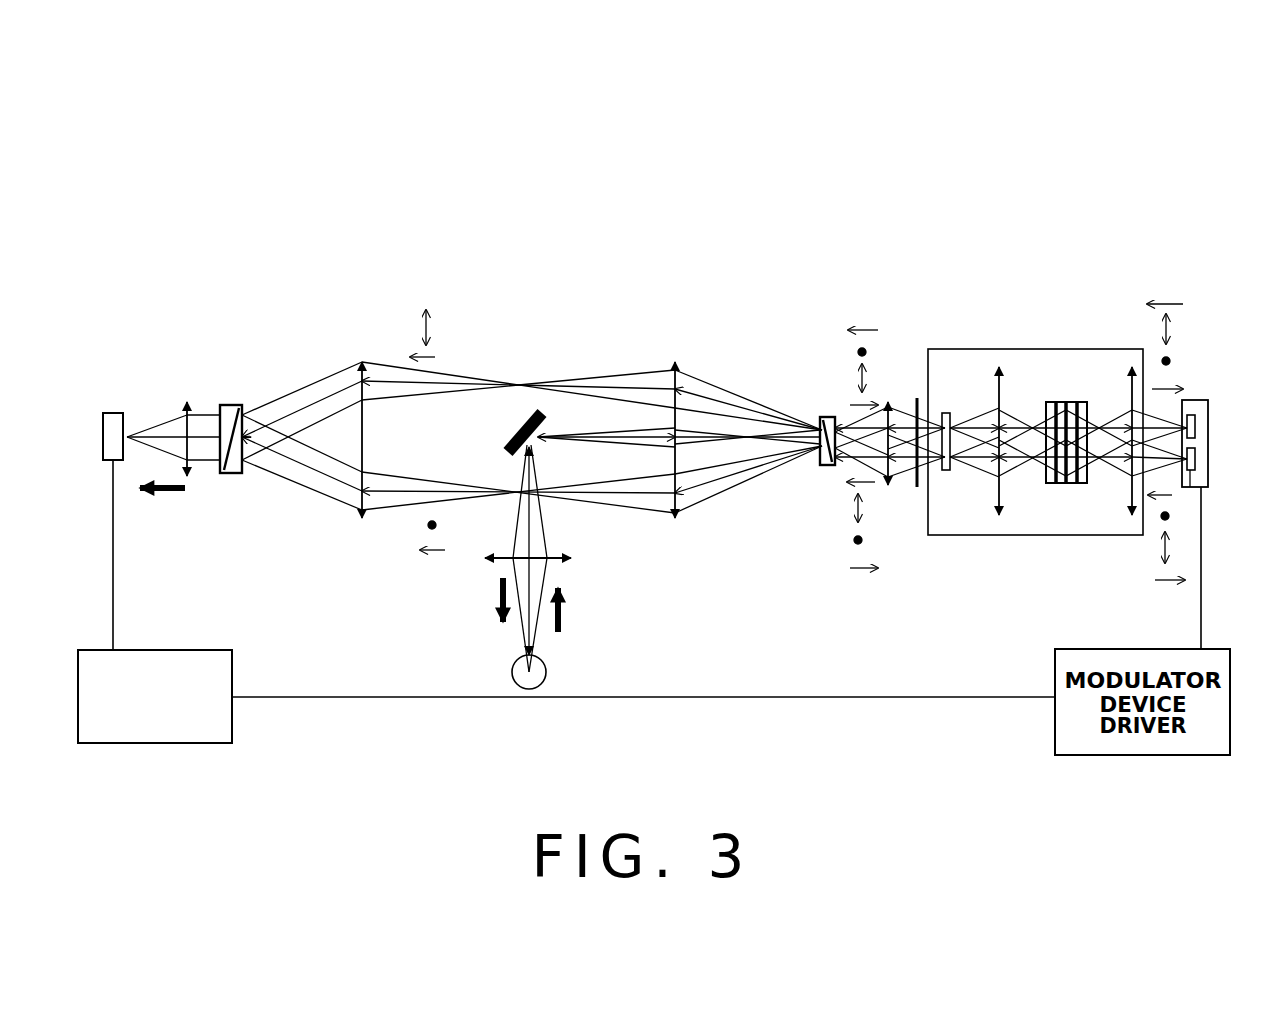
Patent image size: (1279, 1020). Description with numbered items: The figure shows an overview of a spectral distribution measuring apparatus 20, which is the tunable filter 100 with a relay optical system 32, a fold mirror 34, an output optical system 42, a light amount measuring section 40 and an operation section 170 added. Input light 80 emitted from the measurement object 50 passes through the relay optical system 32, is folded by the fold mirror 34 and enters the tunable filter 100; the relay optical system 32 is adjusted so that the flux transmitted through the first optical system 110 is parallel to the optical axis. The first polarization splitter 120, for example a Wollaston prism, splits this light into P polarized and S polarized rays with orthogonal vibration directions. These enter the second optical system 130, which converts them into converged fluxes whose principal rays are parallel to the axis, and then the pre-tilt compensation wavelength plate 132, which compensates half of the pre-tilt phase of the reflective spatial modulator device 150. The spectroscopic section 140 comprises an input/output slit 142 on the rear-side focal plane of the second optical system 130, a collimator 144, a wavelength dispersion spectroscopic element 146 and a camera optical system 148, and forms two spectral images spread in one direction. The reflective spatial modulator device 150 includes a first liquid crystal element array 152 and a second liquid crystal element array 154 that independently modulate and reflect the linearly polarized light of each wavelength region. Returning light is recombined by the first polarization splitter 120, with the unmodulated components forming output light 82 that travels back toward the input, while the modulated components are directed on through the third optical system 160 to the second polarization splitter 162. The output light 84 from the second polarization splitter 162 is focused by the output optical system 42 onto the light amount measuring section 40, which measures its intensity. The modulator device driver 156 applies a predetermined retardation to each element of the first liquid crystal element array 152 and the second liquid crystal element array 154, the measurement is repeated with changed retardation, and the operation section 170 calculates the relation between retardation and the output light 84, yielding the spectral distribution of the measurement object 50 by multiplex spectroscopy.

The spectral distribution measuring apparatus 20 is at (362, 142).
The relay optical system 32 is at (575, 558).
The fold mirror 34 is at (507, 442).
The light amount measuring section 40 is at (113, 413).
The output optical system 42 is at (187, 400).
The measurement object 50 is at (547, 672).
The input light 80 is at (565, 608).
The output light 82 is at (497, 603).
The output light 84 is at (180, 492).
The tunable filter 100 is at (873, 205).
The first optical system 110 is at (675, 360).
The first polarization splitter 120 is at (825, 417).
The second optical system 130 is at (888, 400).
The pre-tilt compensation wavelength plate 132 is at (917, 487).
The spectroscopic section 140 is at (1105, 349).
The input/output slit 142 is at (945, 413).
The collimator 144 is at (999, 517).
The wavelength dispersion spectroscopic element 146 is at (1050, 402).
The camera optical system 148 is at (1132, 517).
The reflective spatial modulator device 150 is at (1202, 487).
The first liquid crystal element array 152 is at (1200, 418).
The second liquid crystal element array 154 is at (1190, 487).
The modulator device driver 156 is at (1227, 568).
The third optical system 160 is at (362, 360).
The second polarization splitter 162 is at (231, 405).
The operation section 170 is at (155, 680).